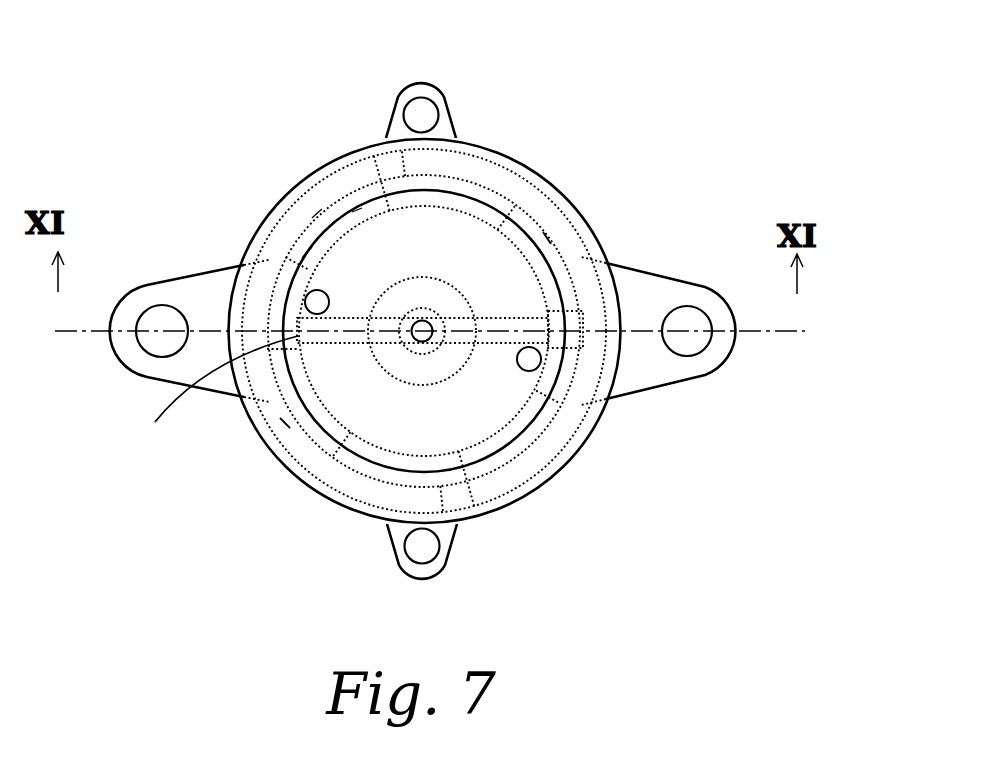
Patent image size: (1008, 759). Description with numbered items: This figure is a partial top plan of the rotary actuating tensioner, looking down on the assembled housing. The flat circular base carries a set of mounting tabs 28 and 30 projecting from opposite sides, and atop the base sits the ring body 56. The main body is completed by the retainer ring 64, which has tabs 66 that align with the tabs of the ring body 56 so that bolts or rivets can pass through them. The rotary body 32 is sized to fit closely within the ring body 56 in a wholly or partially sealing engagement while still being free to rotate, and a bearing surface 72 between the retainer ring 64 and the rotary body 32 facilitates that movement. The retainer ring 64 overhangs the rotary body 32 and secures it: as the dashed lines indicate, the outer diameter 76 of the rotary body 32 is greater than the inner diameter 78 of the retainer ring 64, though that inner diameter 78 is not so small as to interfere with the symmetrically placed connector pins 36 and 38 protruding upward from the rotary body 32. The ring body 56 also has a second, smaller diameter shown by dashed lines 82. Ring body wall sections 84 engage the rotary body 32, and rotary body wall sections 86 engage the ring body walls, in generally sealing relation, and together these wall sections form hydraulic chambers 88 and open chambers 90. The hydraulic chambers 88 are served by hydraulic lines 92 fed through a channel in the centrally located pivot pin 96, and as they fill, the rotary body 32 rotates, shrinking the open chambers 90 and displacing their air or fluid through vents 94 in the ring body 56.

The mounting tab 28 is at (705, 300).
The mounting tab 30 is at (147, 358).
The rotary body 32 is at (424, 331).
The connector pin 36 is at (322, 306).
The connector pin 38 is at (524, 363).
The ring body 56 is at (517, 177).
The retainer ring 64 is at (547, 192).
The tabs 66 is at (434, 86).
The bearing surface 72 is at (285, 423).
The outer diameter 76 is at (317, 213).
The inner diameter 78 is at (307, 252).
The second diameter 82 is at (360, 215).
The ring body wall section 84 is at (338, 205).
The rotary body wall section 86 is at (547, 238).
The hydraulic chamber 88 is at (280, 298).
The open chamber 90 is at (465, 190).
The hydraulic line 92 is at (712, 423).
The vent 94 is at (389, 168).
The pivot pin 96 is at (412, 336).